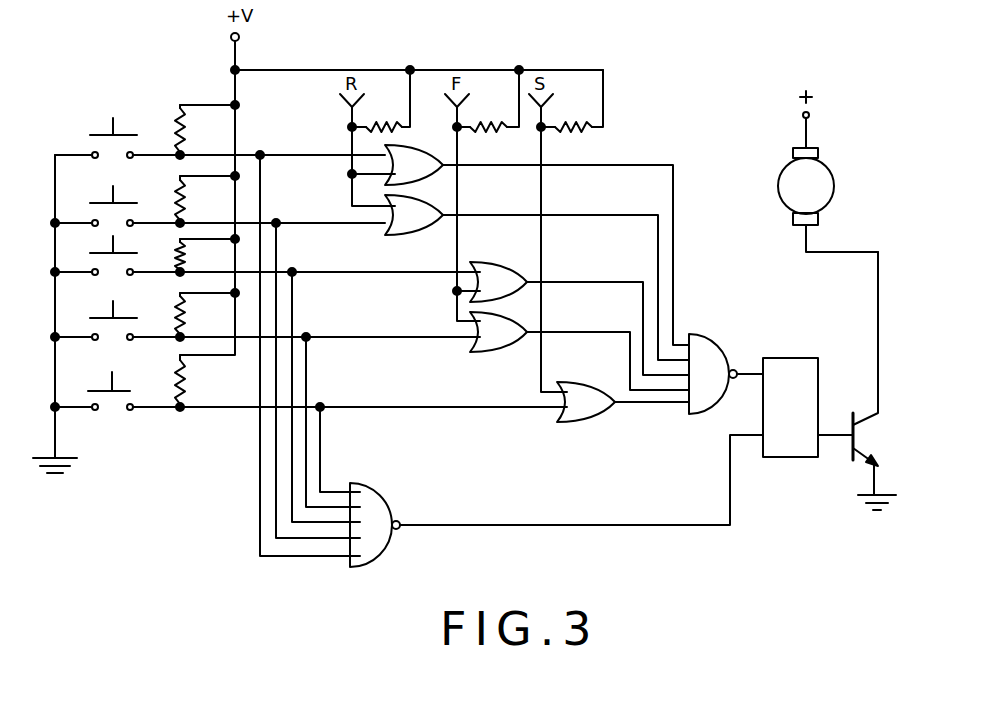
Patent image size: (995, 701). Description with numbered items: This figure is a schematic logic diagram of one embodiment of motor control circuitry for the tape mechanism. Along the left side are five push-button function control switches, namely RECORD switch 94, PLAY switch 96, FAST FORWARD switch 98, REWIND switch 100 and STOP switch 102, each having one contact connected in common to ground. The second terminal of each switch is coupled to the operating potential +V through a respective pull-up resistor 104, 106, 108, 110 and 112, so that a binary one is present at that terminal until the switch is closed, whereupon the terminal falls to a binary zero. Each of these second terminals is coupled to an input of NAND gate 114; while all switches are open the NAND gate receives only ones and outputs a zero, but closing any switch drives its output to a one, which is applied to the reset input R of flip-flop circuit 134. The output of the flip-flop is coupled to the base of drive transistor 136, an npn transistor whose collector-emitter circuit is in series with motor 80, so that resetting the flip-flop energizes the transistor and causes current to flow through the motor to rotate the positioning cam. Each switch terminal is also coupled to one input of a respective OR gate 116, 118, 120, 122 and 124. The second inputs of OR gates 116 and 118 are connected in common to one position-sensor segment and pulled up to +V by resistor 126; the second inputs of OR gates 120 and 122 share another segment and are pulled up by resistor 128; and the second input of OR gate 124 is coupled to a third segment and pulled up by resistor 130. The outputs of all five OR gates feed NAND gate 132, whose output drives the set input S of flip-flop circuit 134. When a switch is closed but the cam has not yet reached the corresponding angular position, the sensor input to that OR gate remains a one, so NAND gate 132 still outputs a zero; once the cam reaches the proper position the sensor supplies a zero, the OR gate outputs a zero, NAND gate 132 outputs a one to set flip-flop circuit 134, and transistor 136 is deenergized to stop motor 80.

The motor 80 is at (790, 207).
The RECORD switch 94 is at (78, 134).
The PLAY switch 96 is at (102, 202).
The FAST FORWARD switch 98 is at (92, 253).
The REWIND switch 100 is at (168, 266).
The STOP switch 102 is at (144, 424).
The pull-up resistor 104 is at (171, 124).
The pull-up resistor 106 is at (169, 207).
The pull-up resistor 108 is at (267, 310).
The pull-up resistor 110 is at (167, 318).
The pull-up resistor 112 is at (184, 384).
The NAND gate 114 is at (393, 519).
The OR gate 116 is at (414, 158).
The OR gate 118 is at (409, 228).
The OR gate 120 is at (525, 241).
The OR gate 122 is at (499, 341).
The OR gate 124 is at (612, 410).
The pull-up resistor 126 is at (381, 116).
The pull-up resistor 128 is at (485, 118).
The pull-up resistor 130 is at (575, 118).
The NAND gate 132 is at (711, 341).
The flip-flop circuit 134 is at (795, 447).
The drive transistor 136 is at (870, 415).